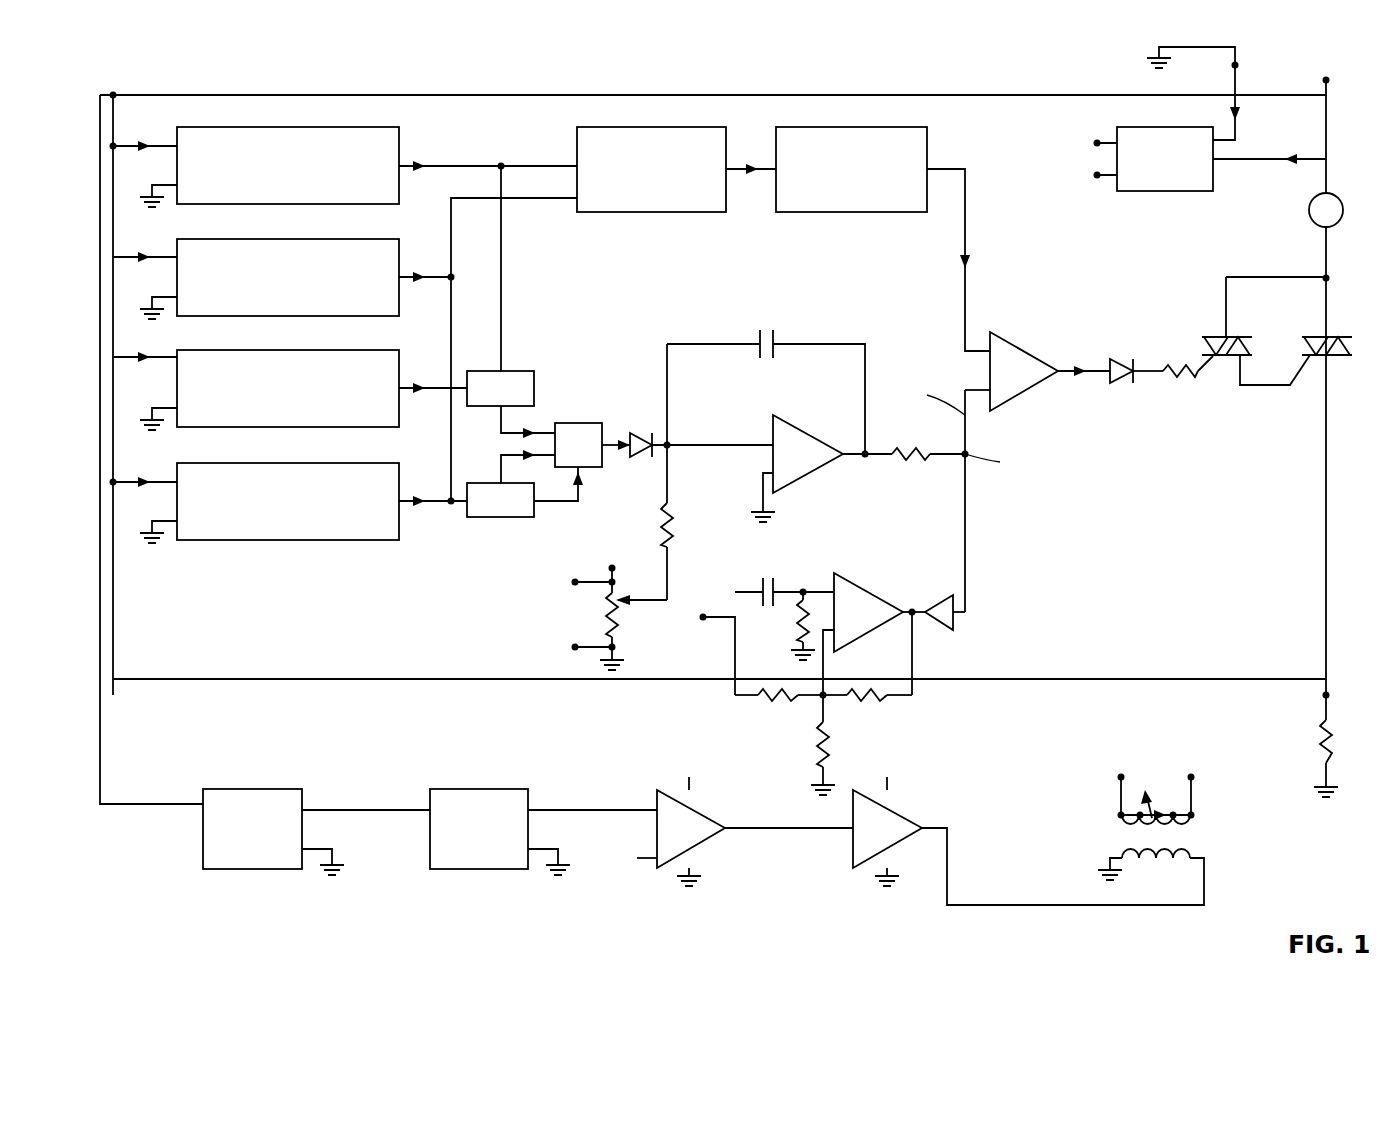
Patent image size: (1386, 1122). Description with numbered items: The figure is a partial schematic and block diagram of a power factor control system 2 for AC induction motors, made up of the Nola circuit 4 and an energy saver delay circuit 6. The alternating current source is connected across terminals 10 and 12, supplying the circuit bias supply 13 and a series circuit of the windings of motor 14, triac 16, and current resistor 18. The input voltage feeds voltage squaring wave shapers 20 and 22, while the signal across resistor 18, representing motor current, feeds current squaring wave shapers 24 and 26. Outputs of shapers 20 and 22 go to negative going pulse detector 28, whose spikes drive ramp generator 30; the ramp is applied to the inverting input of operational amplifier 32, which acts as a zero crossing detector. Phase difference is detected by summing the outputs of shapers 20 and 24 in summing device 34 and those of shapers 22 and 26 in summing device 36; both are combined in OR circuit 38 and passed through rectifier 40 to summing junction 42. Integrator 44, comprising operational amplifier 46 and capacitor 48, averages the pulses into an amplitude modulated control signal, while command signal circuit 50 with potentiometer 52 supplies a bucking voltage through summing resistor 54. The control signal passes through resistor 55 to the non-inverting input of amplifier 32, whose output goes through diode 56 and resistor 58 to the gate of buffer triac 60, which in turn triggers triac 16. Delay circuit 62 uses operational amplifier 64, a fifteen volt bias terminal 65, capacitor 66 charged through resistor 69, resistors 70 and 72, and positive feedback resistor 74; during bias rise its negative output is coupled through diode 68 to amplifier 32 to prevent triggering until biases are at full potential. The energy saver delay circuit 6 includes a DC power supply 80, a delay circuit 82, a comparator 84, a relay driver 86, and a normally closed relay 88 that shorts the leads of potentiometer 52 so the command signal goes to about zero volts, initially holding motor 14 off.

The power factor control system 2 is at (172, 908).
The Nola '177 circuit 4 is at (212, 721).
The energy saver delay circuit 6 is at (756, 912).
The terminal 10 is at (1326, 80).
The terminal 12 is at (1235, 65).
The circuit bias supply 13 is at (1163, 127).
The motor 14 is at (1309, 210).
The triac 16 is at (1318, 337).
The current resistor 18 is at (1324, 738).
The voltage squaring wave shaper 20 is at (345, 127).
The voltage squaring wave shaper 22 is at (345, 239).
The current squaring wave shaper 24 is at (345, 350).
The current squaring wave shaper 26 is at (345, 463).
The negative going pulse detector 28 is at (670, 127).
The ramp generator 30 is at (870, 127).
The operational amplifier 32 is at (1022, 397).
The summing device 34 is at (512, 371).
The summing device 36 is at (518, 517).
The OR circuit 38 is at (578, 423).
The rectifier 40 is at (635, 433).
The summing junction 42 is at (667, 445).
The integrator 44 is at (941, 256).
The operational amplifier 46 is at (805, 432).
The capacitor 48 is at (777, 332).
The command signal circuit 50 is at (615, 556).
The potentiometer 52 is at (605, 615).
The summing resistor 54 is at (664, 503).
The resistor 55 is at (908, 460).
The diode 56 is at (1115, 388).
The resistor 58 is at (1182, 378).
The buffer triac 60 is at (1216, 337).
The delay circuit 62 is at (965, 497).
The operational amplifier 64 is at (865, 588).
The bias terminal 65 is at (703, 617).
The capacitor 66 is at (768, 578).
The diode 68 is at (938, 630).
The resistor 69 is at (795, 612).
The resistor 70 is at (780, 703).
The resistor 72 is at (832, 740).
The positive feedback resistor 74 is at (868, 703).
The DC power supply 80 is at (253, 789).
The delay circuit 82 is at (479, 789).
The comparator 84 is at (657, 790).
The relay driver 86 is at (853, 848).
The relay 88 is at (1195, 838).